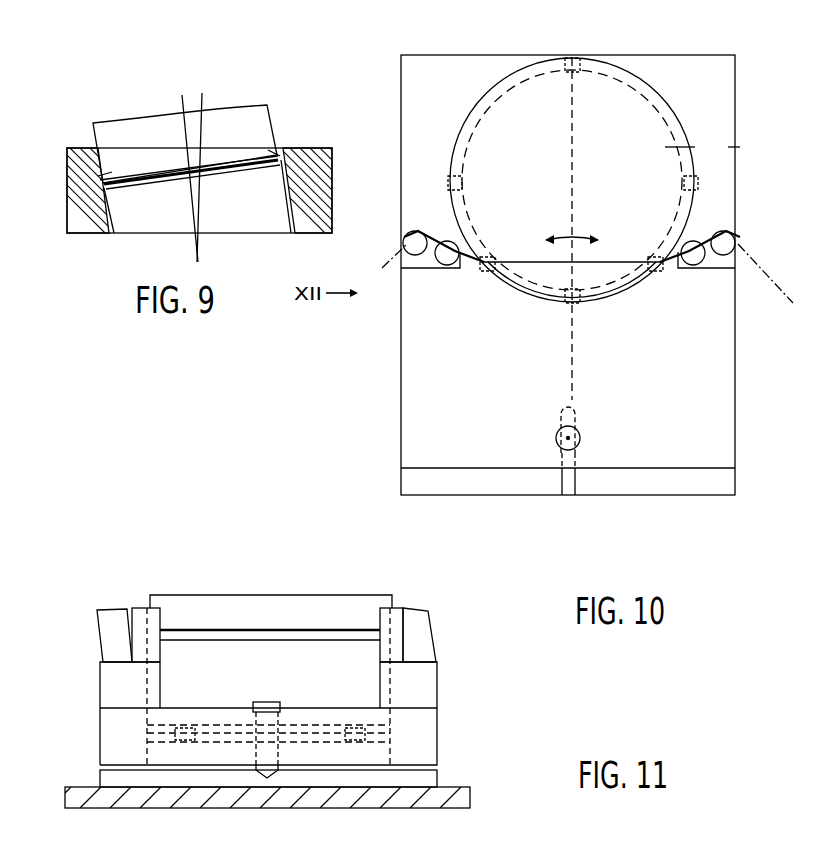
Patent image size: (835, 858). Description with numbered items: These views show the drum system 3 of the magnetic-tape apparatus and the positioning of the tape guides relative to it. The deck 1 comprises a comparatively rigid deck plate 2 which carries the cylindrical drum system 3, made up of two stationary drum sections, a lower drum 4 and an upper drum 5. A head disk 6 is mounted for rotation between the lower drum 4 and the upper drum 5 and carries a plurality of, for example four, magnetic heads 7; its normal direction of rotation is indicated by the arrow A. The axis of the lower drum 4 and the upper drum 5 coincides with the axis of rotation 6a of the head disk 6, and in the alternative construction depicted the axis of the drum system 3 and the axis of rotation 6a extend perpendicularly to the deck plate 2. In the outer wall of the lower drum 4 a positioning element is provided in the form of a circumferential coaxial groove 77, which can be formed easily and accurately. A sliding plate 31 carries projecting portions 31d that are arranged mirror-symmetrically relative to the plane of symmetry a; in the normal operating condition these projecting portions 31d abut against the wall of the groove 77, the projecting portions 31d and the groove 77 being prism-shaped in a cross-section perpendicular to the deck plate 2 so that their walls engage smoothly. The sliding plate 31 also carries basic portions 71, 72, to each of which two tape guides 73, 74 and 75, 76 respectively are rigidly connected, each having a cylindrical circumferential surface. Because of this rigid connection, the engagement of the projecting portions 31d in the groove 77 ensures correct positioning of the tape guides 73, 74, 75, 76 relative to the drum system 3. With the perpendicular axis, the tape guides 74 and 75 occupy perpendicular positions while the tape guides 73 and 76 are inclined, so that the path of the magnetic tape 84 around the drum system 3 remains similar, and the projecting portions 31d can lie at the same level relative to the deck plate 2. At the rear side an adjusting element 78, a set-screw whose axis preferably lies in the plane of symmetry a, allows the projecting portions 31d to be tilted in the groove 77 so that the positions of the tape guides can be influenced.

In FIG. 11, the deck 1 is at (333, 796).
In FIG. 10, the deck plate 2 is at (727, 106).
In FIG. 11, the deck plate 2 is at (369, 780).
In FIG. 11, the drum system 3 is at (295, 586).
In FIG. 9, the lower drum 4 is at (243, 215).
In FIG. 11, the lower drum 4 is at (278, 678).
In FIG. 11, the upper drum 5 is at (372, 607).
In FIG. 10, the head disk 6 is at (517, 262).
In FIG. 11, the head disk 6 is at (207, 632).
In FIG. 9, the axis of rotation 6a is at (185, 122).
In FIG. 10, the axis of rotation 6a is at (573, 185).
In FIG. 10, the magnetic heads 7 is at (580, 58).
In FIG. 9, the sliding plate 31 is at (308, 160).
In FIG. 9, the projecting portions 31d is at (82, 178).
In FIG. 10, the projecting portions 31d is at (478, 272).
In FIG. 11, the projecting portions 31d is at (185, 727).
In FIG. 10, the basic portion 71 is at (433, 269).
In FIG. 10, the basic portion 72 is at (712, 269).
In FIG. 10, the tape guide 73 is at (415, 245).
In FIG. 11, the tape guide 73 is at (112, 606).
In FIG. 10, the tape guide 74 is at (447, 256).
In FIG. 11, the tape guide 74 is at (141, 604).
In FIG. 10, the tape guide 75 is at (693, 252).
In FIG. 11, the tape guide 75 is at (397, 611).
In FIG. 10, the tape guide 76 is at (726, 243).
In FIG. 11, the tape guide 76 is at (418, 617).
In FIG. 9, the groove 77 is at (156, 190).
In FIG. 10, the groove 77 is at (668, 105).
In FIG. 11, the groove 77 is at (147, 735).
In FIG. 10, the adjusting element 78 is at (580, 438).
In FIG. 11, the adjusting element 78 is at (278, 705).
In FIG. 10, the magnetic tape 84 is at (587, 267).
In FIG. 9, the plane of symmetry a is at (204, 118).
In FIG. 10, the plane of symmetry a is at (572, 46).
In FIG. 10, the arrow A is at (573, 236).